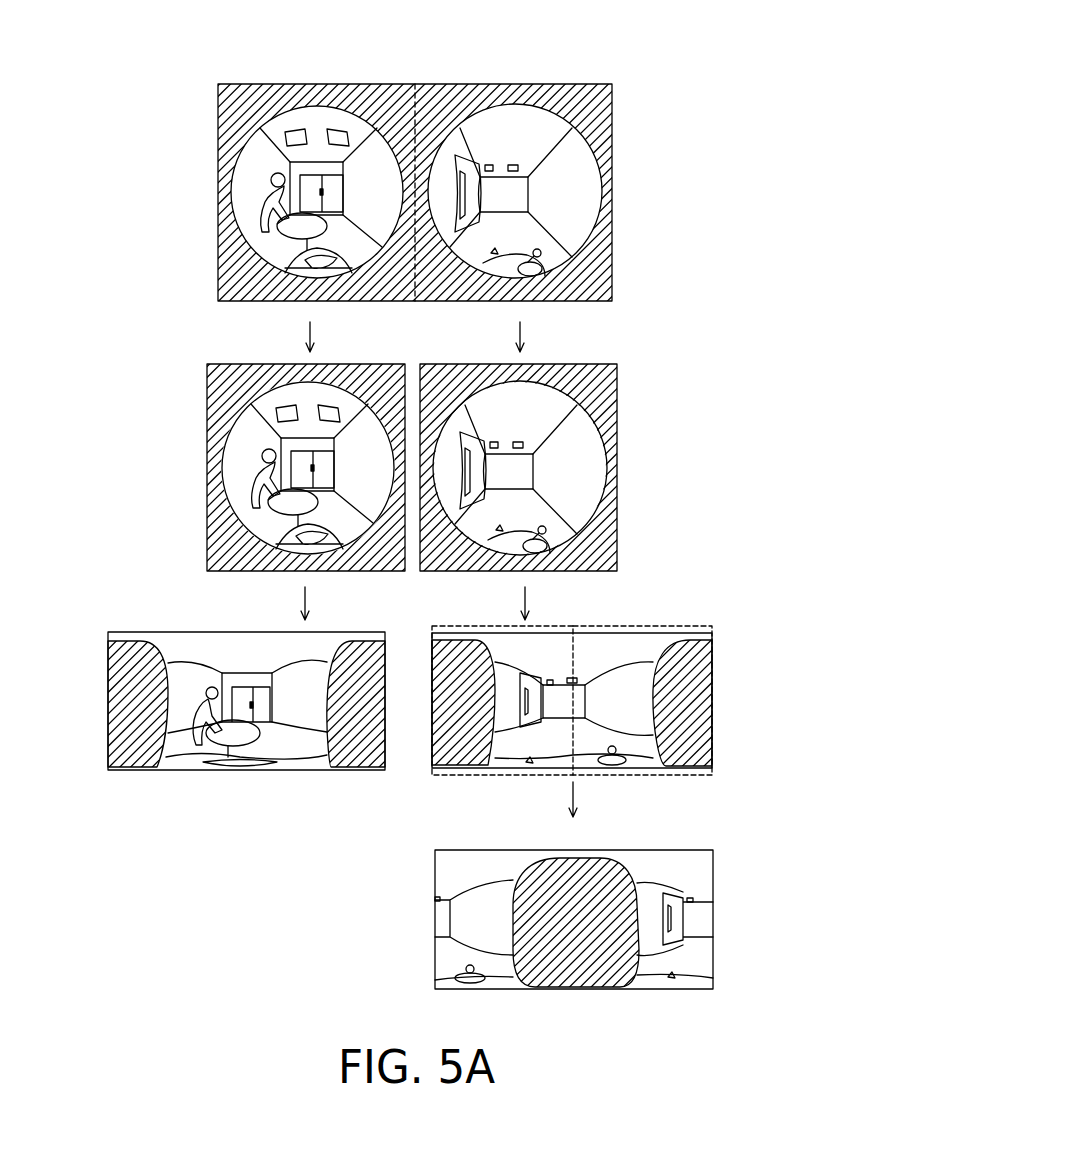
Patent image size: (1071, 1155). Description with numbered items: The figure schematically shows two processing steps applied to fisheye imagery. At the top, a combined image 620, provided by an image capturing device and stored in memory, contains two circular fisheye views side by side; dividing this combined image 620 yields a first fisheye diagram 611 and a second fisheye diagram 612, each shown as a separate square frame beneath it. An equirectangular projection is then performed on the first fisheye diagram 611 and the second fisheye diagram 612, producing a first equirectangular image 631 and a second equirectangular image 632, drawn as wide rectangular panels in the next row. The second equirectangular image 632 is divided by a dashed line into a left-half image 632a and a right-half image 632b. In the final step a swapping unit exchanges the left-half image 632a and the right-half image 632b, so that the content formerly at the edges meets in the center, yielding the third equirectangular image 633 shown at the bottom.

The first fisheye diagram 611 is at (382, 84).
The second fisheye diagram 612 is at (582, 84).
The combined image 620 is at (685, 14).
The first equirectangular image 631 is at (108, 697).
The second equirectangular image 632 is at (535, 530).
The left-half image 632a is at (553, 626).
The right-half image 632b is at (630, 626).
The third equirectangular image 633 is at (713, 917).